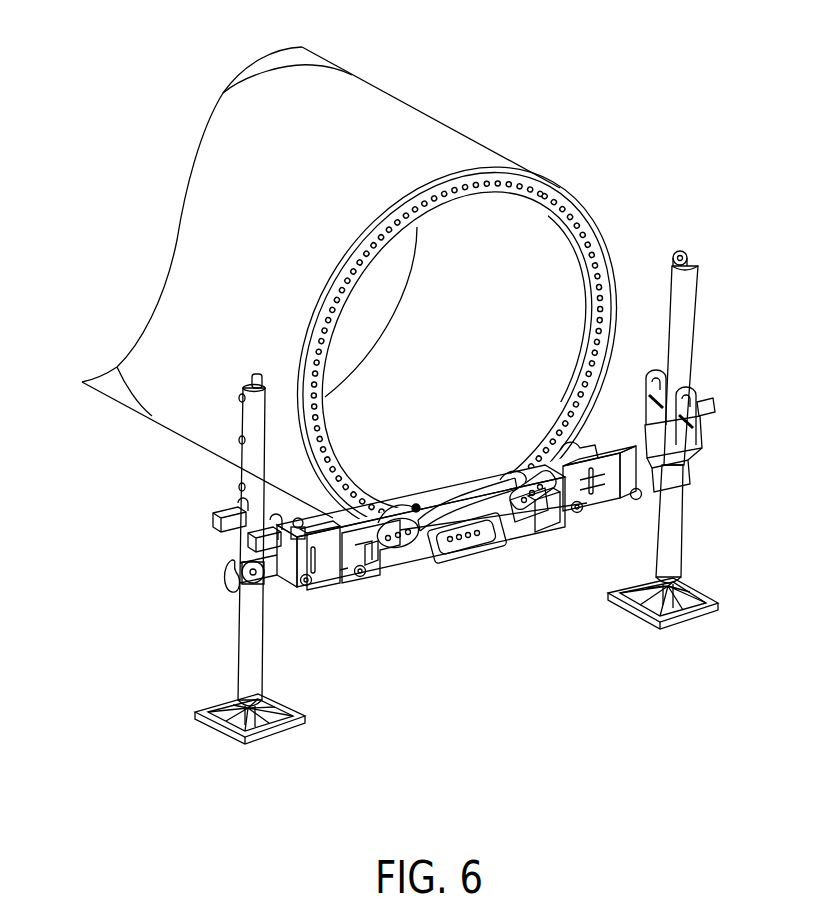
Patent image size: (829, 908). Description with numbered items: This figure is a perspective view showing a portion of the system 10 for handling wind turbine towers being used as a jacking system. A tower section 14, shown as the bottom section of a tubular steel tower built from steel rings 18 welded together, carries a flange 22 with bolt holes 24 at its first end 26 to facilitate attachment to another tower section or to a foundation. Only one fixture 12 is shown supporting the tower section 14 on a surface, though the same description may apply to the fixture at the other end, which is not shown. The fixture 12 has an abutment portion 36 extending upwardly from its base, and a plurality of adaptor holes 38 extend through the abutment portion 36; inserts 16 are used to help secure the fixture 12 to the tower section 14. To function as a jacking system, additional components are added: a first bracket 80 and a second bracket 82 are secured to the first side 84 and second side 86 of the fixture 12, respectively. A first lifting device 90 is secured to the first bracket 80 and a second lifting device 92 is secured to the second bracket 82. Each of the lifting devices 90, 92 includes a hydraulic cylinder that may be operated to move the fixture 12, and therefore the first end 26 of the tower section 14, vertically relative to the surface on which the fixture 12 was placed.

The system 10 is at (528, 88).
The fixture 12 is at (434, 589).
The tower section 14 is at (389, 70).
The insert 16 is at (513, 480).
The steel ring 18 is at (445, 147).
The flange 22 is at (330, 452).
The bolt hole 24 is at (335, 340).
The first end 26 is at (600, 226).
The abutment portion 36 is at (387, 513).
The adaptor hole 38 is at (530, 537).
The first bracket 80 is at (317, 588).
The second bracket 82 is at (603, 503).
The first side 84 is at (367, 587).
The second side 86 is at (547, 517).
The first lifting device 90 is at (242, 627).
The second lifting device 92 is at (680, 500).